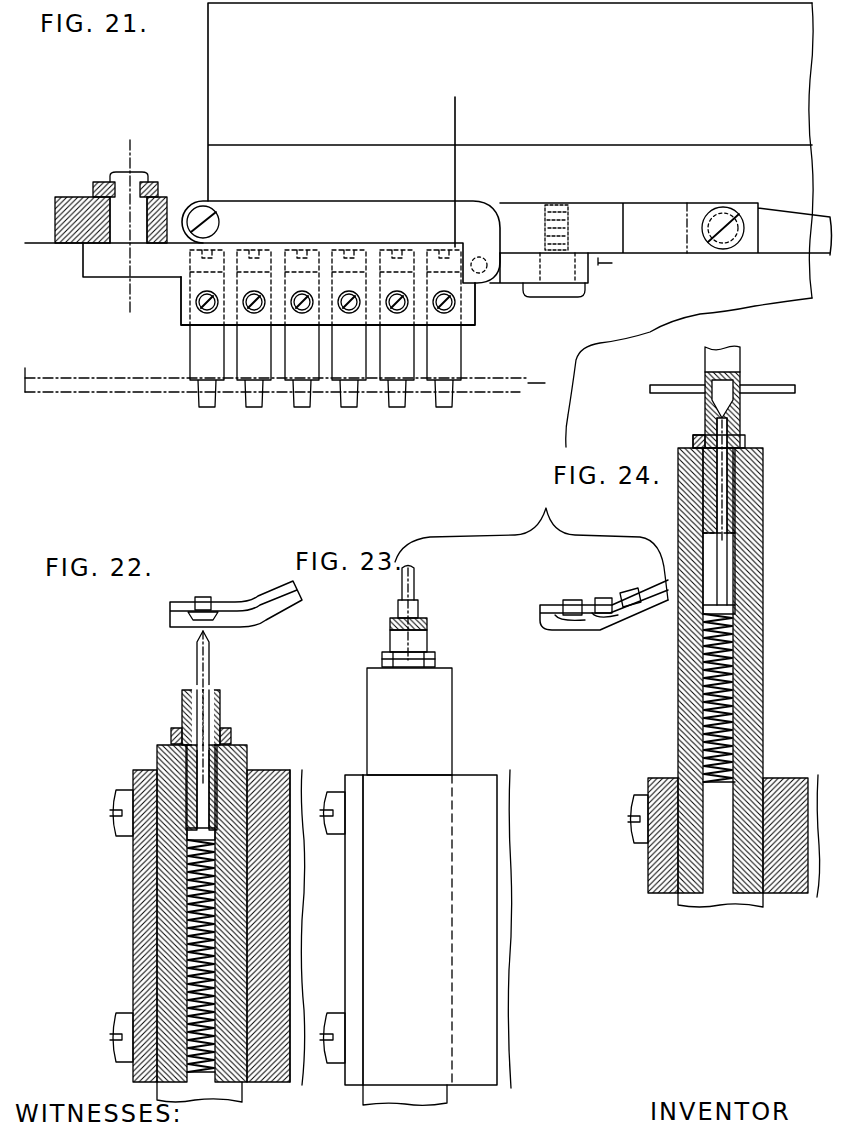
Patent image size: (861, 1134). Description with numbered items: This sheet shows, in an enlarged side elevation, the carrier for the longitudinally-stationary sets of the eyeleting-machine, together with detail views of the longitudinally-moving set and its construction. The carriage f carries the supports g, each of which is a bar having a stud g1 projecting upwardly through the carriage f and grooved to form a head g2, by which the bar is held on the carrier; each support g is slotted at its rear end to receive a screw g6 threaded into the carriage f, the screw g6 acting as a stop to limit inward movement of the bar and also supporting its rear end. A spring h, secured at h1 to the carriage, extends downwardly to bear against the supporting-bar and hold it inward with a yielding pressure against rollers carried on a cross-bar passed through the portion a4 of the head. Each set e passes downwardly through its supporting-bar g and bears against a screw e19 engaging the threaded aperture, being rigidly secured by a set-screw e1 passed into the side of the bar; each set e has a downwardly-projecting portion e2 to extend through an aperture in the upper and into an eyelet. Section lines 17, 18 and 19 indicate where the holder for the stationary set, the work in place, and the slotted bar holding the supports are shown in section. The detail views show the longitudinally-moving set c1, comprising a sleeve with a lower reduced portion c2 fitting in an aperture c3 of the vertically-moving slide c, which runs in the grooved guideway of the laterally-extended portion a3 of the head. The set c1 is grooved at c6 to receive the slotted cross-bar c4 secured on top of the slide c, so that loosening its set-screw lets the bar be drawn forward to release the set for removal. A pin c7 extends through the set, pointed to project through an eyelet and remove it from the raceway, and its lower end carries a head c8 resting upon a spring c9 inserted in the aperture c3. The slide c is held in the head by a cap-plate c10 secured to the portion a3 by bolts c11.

In FIG. 21, the portion of the head a4 is at (510, 225).
In FIG. 22, the laterally-extended portion of the head a3 is at (295, 785).
In FIG. 23, the laterally-extended portion of the head a3 is at (428, 929).
In FIG. 24, the laterally-extended portion of the head a3 is at (790, 796).
In FIG. 21, the carriage f is at (72, 200).
In FIG. 21, the spring h is at (352, 215).
In FIG. 21, the securing point of spring h1 is at (216, 216).
In FIG. 21, the support g is at (175, 268).
In FIG. 21, the stud g1 is at (125, 227).
In FIG. 21, the head g2 is at (146, 184).
In FIG. 21, the screw g6 is at (548, 285).
In FIG. 21, the set e is at (325, 328).
In FIG. 21, the set-screw e1 is at (351, 313).
In FIG. 21, the downwardly-projecting portion e2 is at (262, 407).
In FIG. 21, the screw e19 is at (276, 244).
In FIG. 21, the section line 17 17 is at (328, 257).
In FIG. 21, the section line 18 18 is at (293, 372).
In FIG. 21, the section line 19 19 is at (129, 220).
In FIG. 22, the slide c is at (175, 928).
In FIG. 23, the slide c is at (432, 720).
In FIG. 24, the slide c is at (678, 663).
In FIG. 22, the set c1 is at (222, 703).
In FIG. 23, the set c1 is at (420, 635).
In FIG. 24, the set c1 is at (705, 410).
In FIG. 22, the lower reduced portion c2 is at (215, 768).
In FIG. 24, the lower reduced portion c2 is at (735, 468).
In FIG. 22, the aperture c3 is at (185, 890).
In FIG. 24, the aperture c3 is at (735, 640).
In FIG. 22, the cross-bar c4 is at (176, 728).
In FIG. 23, the cross-bar c4 is at (388, 652).
In FIG. 24, the cross-bar c4 is at (693, 440).
In FIG. 22, the groove c6 is at (232, 736).
In FIG. 22, the pin c7 is at (212, 660).
In FIG. 23, the pin c7 is at (416, 583).
In FIG. 24, the pin c7 is at (728, 425).
In FIG. 22, the head c8 is at (190, 838).
In FIG. 24, the head c8 is at (728, 608).
In FIG. 22, the spring c9 is at (195, 963).
In FIG. 24, the spring c9 is at (730, 727).
In FIG. 22, the cap-plate c10 is at (142, 997).
In FIG. 23, the cap-plate c10 is at (355, 864).
In FIG. 24, the cap-plate c10 is at (660, 860).
In FIG. 22, the bolt c11 is at (122, 785).
In FIG. 23, the bolt c11 is at (335, 812).
In FIG. 24, the bolt c11 is at (634, 819).